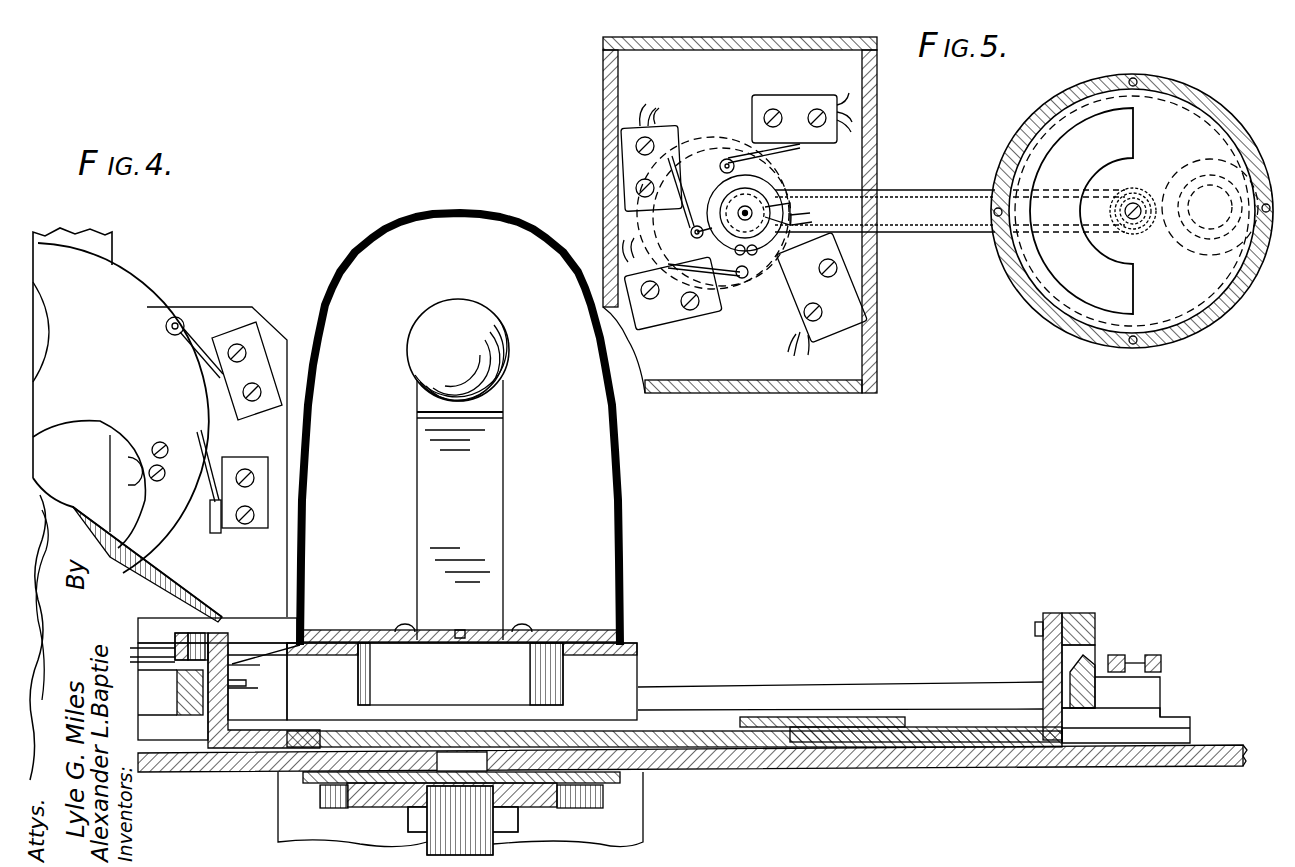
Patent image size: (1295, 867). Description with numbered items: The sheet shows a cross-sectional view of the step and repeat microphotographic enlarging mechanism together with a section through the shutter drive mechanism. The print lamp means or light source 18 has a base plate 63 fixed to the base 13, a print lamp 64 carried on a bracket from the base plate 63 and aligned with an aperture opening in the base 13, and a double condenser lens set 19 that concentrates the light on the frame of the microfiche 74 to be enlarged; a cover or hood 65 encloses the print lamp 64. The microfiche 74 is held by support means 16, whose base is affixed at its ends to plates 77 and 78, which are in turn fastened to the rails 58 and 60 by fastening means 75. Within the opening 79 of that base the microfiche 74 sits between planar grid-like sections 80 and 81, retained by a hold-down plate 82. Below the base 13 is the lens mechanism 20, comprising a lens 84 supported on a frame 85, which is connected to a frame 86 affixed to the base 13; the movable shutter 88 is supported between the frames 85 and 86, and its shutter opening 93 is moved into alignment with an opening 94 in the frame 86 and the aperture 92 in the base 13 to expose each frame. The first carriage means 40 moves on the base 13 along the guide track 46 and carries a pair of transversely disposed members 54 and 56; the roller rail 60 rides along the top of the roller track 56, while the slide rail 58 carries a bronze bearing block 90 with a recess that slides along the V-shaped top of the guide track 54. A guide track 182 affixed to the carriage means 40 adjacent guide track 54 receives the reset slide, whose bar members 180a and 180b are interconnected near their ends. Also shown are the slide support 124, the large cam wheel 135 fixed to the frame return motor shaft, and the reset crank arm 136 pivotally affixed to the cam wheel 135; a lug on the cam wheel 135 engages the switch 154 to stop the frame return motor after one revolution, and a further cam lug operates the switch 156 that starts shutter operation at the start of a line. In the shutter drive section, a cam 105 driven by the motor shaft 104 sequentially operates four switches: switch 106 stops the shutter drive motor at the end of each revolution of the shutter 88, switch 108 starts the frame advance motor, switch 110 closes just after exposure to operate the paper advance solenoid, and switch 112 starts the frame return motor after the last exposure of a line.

In FIG. 4, the cam wheel 135 is at (92, 293).
In FIG. 4, the switch 156 is at (245, 336).
In FIG. 4, the switch 154 is at (244, 468).
In FIG. 4, the reset crank arm 136 is at (185, 584).
In FIG. 4, the slide support 124 is at (262, 628).
In FIG. 4, the roller rail 60 is at (186, 650).
In FIG. 4, the roller track 56 is at (182, 692).
In FIG. 4, the plate 77 is at (230, 704).
In FIG. 4, the first carriage means 40 is at (199, 753).
In FIG. 4, the cover or hood 65 is at (625, 470).
In FIG. 4, the print lamp means or light source 18 is at (602, 570).
In FIG. 4, the print lamp 64 is at (497, 318).
In FIG. 4, the base plate 63 is at (322, 645).
In FIG. 4, the double condenser lens set 19 is at (440, 678).
In FIG. 4, the support means 16 is at (914, 690).
In FIG. 4, the planar grid-like section 80 is at (715, 730).
In FIG. 4, the hold-down plate 82 is at (840, 715).
In FIG. 4, the planar grid-like section 81 is at (725, 740).
In FIG. 4, the base 13 is at (795, 758).
In FIG. 4, the opening 79 is at (805, 742).
In FIG. 4, the microfiche 74 is at (665, 748).
In FIG. 4, the aperture 92 is at (437, 762).
In FIG. 4, the movable shutter 88 is at (372, 792).
In FIG. 5, the movable shutter 88 is at (1172, 320).
In FIG. 4, the opening 94 is at (404, 792).
In FIG. 4, the lens 84 is at (500, 842).
In FIG. 4, the frame 85 is at (565, 800).
In FIG. 4, the frame 86 is at (600, 784).
In FIG. 4, the lens mechanism 20 is at (413, 855).
In FIG. 4, the plate 78 is at (1043, 655).
In FIG. 4, the slide rail 58 is at (1093, 614).
In FIG. 4, the fastening means 75 is at (1035, 630).
In FIG. 4, the guide track 54 is at (1095, 692).
In FIG. 4, the bearing block 90 is at (1088, 657).
In FIG. 4, the bar member 180a is at (1117, 657).
In FIG. 4, the bar member 180b is at (1153, 656).
In FIG. 4, the guide track 182 is at (1162, 678).
In FIG. 4, the guide track 46 is at (1175, 717).
In FIG. 5, the motor shaft 104 is at (755, 205).
In FIG. 5, the cam 105 is at (727, 200).
In FIG. 5, the switch 110 is at (660, 128).
In FIG. 5, the switch 112 is at (795, 102).
In FIG. 5, the switch 108 is at (667, 315).
In FIG. 5, the switch 106 is at (840, 296).
In FIG. 5, the shutter opening 93 is at (1094, 250).